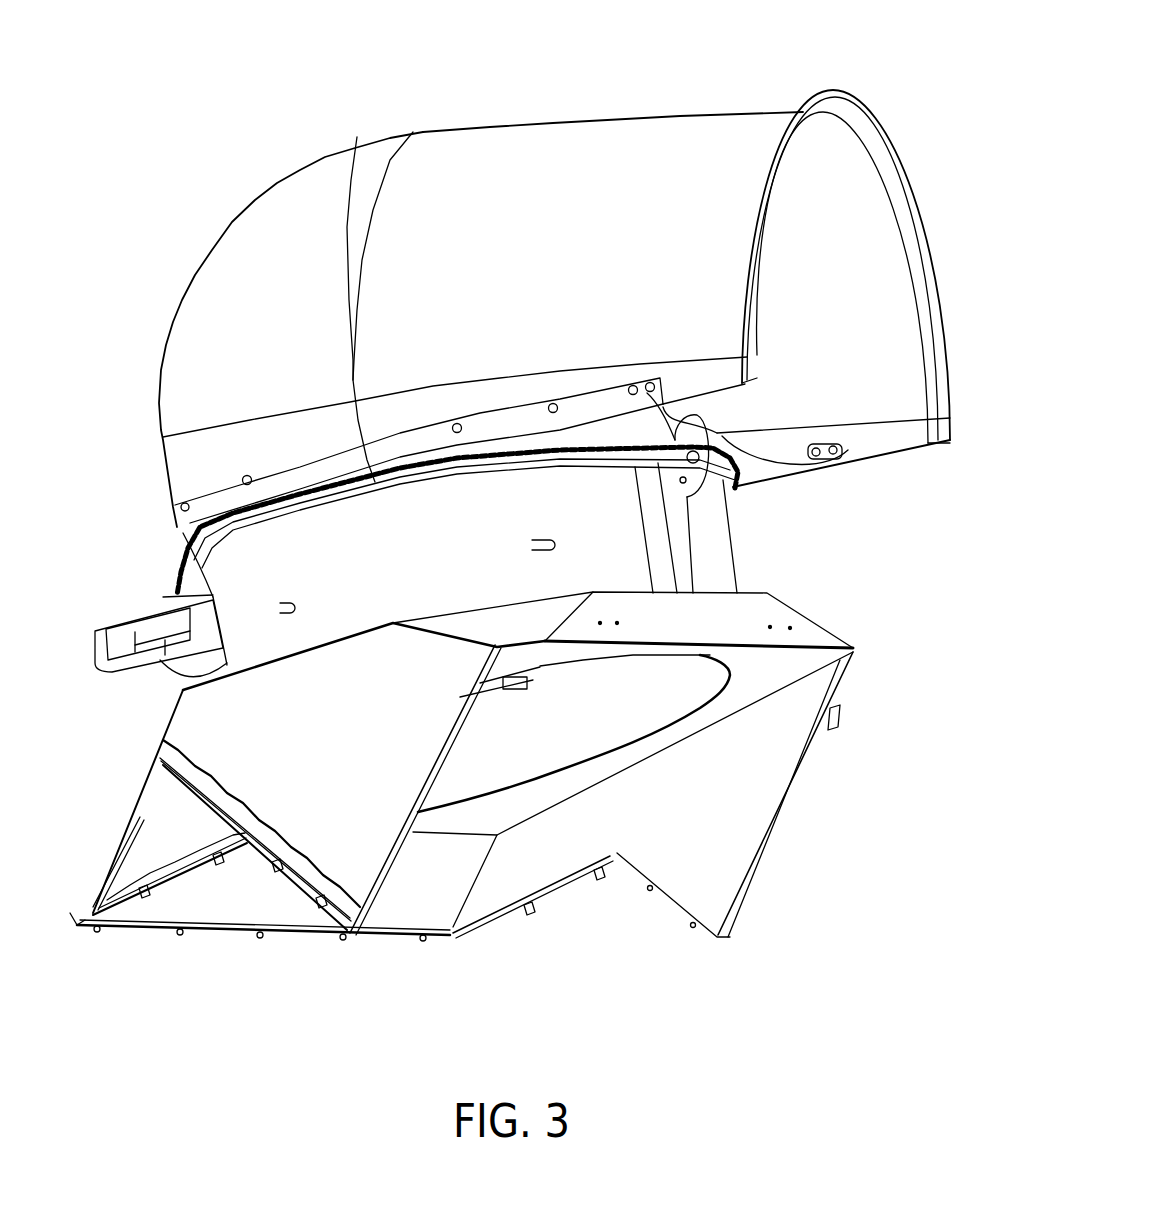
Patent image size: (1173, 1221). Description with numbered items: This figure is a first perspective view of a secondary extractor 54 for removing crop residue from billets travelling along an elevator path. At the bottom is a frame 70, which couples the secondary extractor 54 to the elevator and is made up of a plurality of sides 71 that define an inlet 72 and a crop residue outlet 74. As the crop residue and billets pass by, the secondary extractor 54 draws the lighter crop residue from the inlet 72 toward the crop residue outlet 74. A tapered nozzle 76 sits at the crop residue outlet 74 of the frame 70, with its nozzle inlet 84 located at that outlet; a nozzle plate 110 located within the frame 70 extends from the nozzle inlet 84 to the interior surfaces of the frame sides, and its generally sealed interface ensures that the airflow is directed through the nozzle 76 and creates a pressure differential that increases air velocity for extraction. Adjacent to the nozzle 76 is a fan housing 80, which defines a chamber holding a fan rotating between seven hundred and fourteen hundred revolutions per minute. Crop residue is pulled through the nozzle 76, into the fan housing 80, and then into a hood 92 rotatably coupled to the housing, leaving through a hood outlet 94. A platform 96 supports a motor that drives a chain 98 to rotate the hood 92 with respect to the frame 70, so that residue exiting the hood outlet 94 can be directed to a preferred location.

The secondary extractor 54 is at (633, 82).
The hood 92 is at (285, 200).
The hood outlet 94 is at (878, 290).
The chain 98 is at (180, 563).
The platform 96 is at (117, 630).
The fan housing 80 is at (720, 575).
The frame 70 is at (309, 982).
The inlet 72 is at (592, 965).
The tapered nozzle 76 is at (710, 680).
The nozzle plate 110 is at (805, 661).
The nozzle inlet 84 is at (740, 695).
The crop residue outlet 74 is at (690, 750).
The sides 71 is at (193, 742).